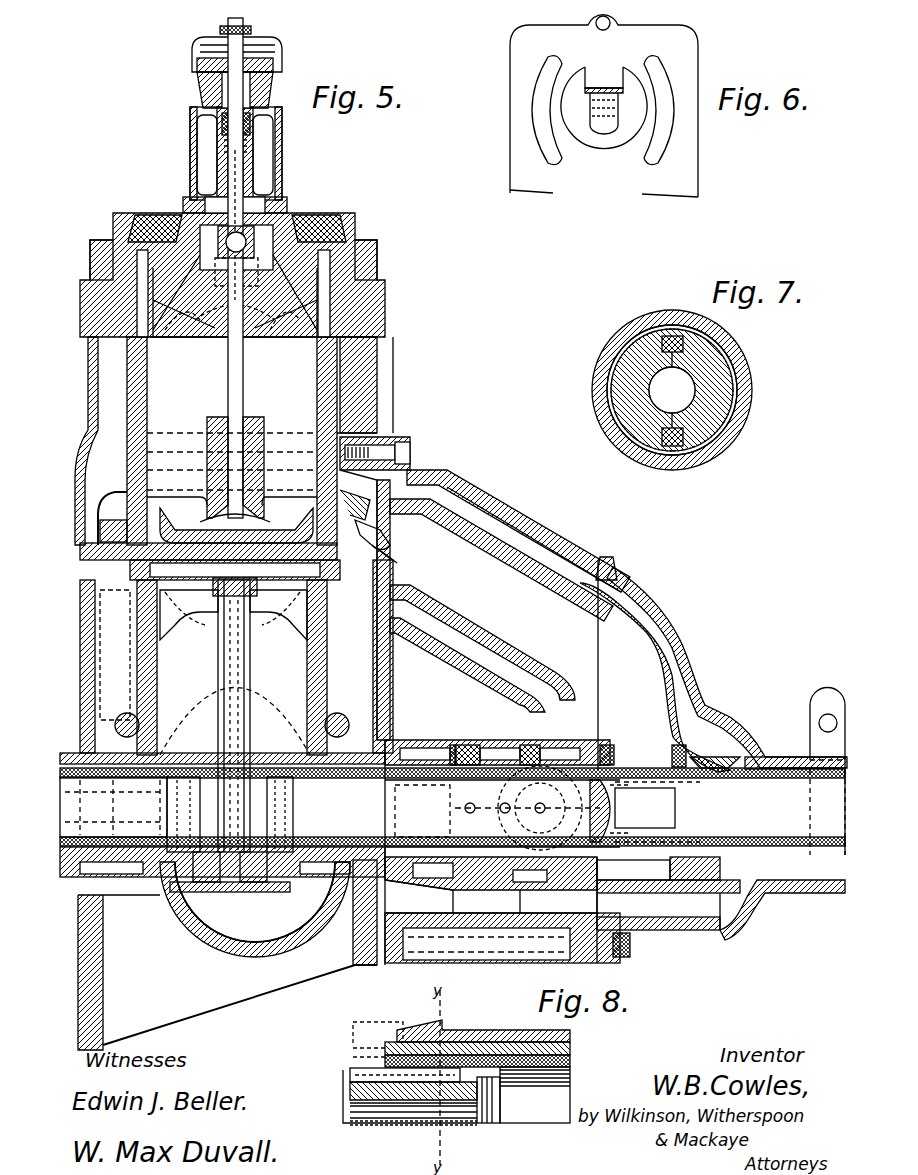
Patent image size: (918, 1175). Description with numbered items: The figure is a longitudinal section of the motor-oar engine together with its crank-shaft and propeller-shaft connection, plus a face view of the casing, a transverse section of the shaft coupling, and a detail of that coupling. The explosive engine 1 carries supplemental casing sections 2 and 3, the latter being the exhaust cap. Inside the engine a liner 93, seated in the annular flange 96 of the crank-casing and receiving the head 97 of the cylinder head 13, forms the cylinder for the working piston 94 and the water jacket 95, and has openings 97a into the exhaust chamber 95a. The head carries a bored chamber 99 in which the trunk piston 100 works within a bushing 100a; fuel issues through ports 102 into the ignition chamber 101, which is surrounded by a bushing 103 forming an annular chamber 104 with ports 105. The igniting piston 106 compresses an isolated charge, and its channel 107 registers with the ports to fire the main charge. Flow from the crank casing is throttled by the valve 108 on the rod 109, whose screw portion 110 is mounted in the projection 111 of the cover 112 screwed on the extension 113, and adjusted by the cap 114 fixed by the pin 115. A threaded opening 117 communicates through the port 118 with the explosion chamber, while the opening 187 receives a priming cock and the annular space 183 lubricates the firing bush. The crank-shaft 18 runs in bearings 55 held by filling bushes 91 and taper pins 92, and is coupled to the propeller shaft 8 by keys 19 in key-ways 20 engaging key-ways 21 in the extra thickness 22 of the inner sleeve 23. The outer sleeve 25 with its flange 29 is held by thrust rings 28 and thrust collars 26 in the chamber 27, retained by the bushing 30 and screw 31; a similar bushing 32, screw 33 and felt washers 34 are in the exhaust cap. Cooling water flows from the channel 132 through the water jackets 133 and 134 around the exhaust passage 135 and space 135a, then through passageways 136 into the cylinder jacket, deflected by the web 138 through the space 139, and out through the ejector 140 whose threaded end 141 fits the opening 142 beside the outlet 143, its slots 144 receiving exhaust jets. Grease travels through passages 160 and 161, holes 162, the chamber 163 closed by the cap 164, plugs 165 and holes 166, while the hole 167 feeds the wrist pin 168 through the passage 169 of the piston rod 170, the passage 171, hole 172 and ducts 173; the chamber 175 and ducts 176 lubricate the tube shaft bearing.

In FIG. 5, the explosive engine 1 is at (115, 377).
In FIG. 6, the explosive engine 1 is at (520, 172).
In FIG. 5, the supplemental casing section 2 is at (500, 510).
In FIG. 5, the supplemental casing section (exhaust cap) 3 is at (705, 672).
In FIG. 5, the propeller shaft 8 is at (507, 810).
In FIG. 7, the propeller shaft 8 is at (752, 400).
In FIG. 8, the propeller shaft 8 is at (570, 1060).
In FIG. 5, the cylinder head (casing top) 13 is at (108, 250).
In FIG. 5, the crank-shaft 18 is at (292, 775).
In FIG. 5, the keys 19 is at (415, 790).
In FIG. 7, the keys 19 is at (700, 332).
In FIG. 8, the keys 19 is at (440, 1105).
In FIG. 7, the key-ways of crank shaft 20 is at (672, 390).
In FIG. 8, the key-ways of crank shaft 20 is at (395, 1085).
In FIG. 7, the key-ways of sleeve 21 is at (640, 325).
In FIG. 8, the key-ways of sleeve 21 is at (495, 1095).
In FIG. 7, the extra thickness of inner sleeve 22 is at (612, 398).
In FIG. 8, the extra thickness of inner sleeve 22 is at (485, 1118).
In FIG. 5, the inner reinforcing sleeve 23 is at (550, 815).
In FIG. 8, the inner reinforcing sleeve 23 is at (545, 1078).
In FIG. 5, the outer reinforcing sleeve 25 is at (468, 745).
In FIG. 7, the outer reinforcing sleeve 25 is at (745, 435).
In FIG. 8, the outer reinforcing sleeve 25 is at (512, 1045).
In FIG. 5, the thrust collars 26 is at (530, 748).
In FIG. 8, the thrust collars 26 is at (465, 1030).
In FIG. 5, the chamber 27 is at (450, 750).
In FIG. 5, the thrust rings 28 is at (530, 748).
In FIG. 5, the annular flange 29 is at (480, 752).
In FIG. 5, the bushing 30 is at (640, 865).
In FIG. 5, the screw 31 is at (612, 748).
In FIG. 5, the bushing 32 is at (660, 893).
In FIG. 5, the screw 33 is at (672, 752).
In FIG. 5, the felt washers 34 is at (620, 862).
In FIG. 5, the bushings (line shaft bearings) 55 is at (196, 752).
In FIG. 5, the filling bushes 91 is at (345, 712).
In FIG. 5, the taper pins 92 is at (150, 672).
In FIG. 5, the sleeve or liner 93 is at (147, 412).
In FIG. 5, the working piston 94 is at (250, 530).
In FIG. 5, the annular chamber (water jacket) 95 is at (372, 358).
In FIG. 5, the annular exhaust chamber 95a is at (98, 528).
In FIG. 5, the annular flange 96 is at (327, 625).
In FIG. 5, the head 97 is at (300, 340).
In FIG. 5, the openings 97a is at (315, 522).
In FIG. 5, the centrally bored chamber 99 is at (222, 178).
In FIG. 5, the trunk piston 100 is at (246, 402).
In FIG. 5, the second bushing 100a is at (262, 238).
In FIG. 5, the ignition chamber 101 is at (205, 340).
In FIG. 5, the ports 102 is at (258, 272).
In FIG. 5, the bushing 103 is at (263, 338).
In FIG. 5, the annular chamber 104 is at (140, 252).
In FIG. 5, the ports 105 is at (178, 335).
In FIG. 5, the igniting piston 106 is at (257, 430).
In FIG. 5, the annular channel 107 is at (262, 462).
In FIG. 5, the valve or plug 108 is at (256, 222).
In FIG. 5, the rod 109 is at (242, 172).
In FIG. 5, the screw portion 110 is at (210, 130).
In FIG. 5, the projection 111 is at (252, 138).
In FIG. 5, the cover 112 is at (205, 60).
In FIG. 5, the extension 113 is at (200, 90).
In FIG. 5, the cap 114 is at (276, 58).
In FIG. 5, the pin 115 is at (246, 30).
In FIG. 5, the threaded opening 117 is at (312, 232).
In FIG. 5, the port 118 is at (355, 283).
In FIG. 5, the annular space or channel 132 is at (795, 755).
In FIG. 5, the water jacket 133 is at (683, 690).
In FIG. 5, the water jacket 134 is at (470, 630).
In FIG. 5, the exhaust passage 135 is at (580, 545).
In FIG. 5, the space 135a is at (487, 682).
In FIG. 6, the passageways 136 is at (530, 118).
In FIG. 5, the web 138 is at (232, 461).
In FIG. 5, the space 139 is at (205, 150).
In FIG. 5, the ejector 140 is at (385, 545).
In FIG. 6, the ejector 140 is at (606, 90).
In FIG. 5, the threaded end 141 is at (412, 462).
In FIG. 5, the opening 142 is at (398, 445).
In FIG. 5, the exhaust chamber outlet 143 is at (376, 566).
In FIG. 6, the exhaust chamber outlet 143 is at (600, 140).
In FIG. 5, the slots or saw-cuts 144 is at (372, 516).
In FIG. 5, the crank shaft passage 160 is at (195, 768).
In FIG. 5, the crank passage 161 is at (228, 940).
In FIG. 5, the holes 162 is at (128, 808).
In FIG. 5, the chamber 163 is at (610, 812).
In FIG. 5, the cap 164 is at (640, 790).
In FIG. 5, the screw plugs 165 is at (275, 768).
In FIG. 5, the holes 166 is at (545, 808).
In FIG. 5, the hole 167 is at (240, 885).
In FIG. 5, the wrist pin 168 is at (268, 618).
In FIG. 5, the passage 169 is at (200, 618).
In FIG. 5, the piston rod 170 is at (250, 718).
In FIG. 5, the passage 171 is at (213, 590).
In FIG. 5, the hole 172 is at (235, 571).
In FIG. 5, the ducts 173 is at (189, 642).
In FIG. 5, the annular chamber 175 is at (700, 755).
In FIG. 5, the ducts 176 is at (725, 865).
In FIG. 5, the annular space 183 is at (345, 312).
In FIG. 5, the screw-threaded opening 187 is at (160, 226).